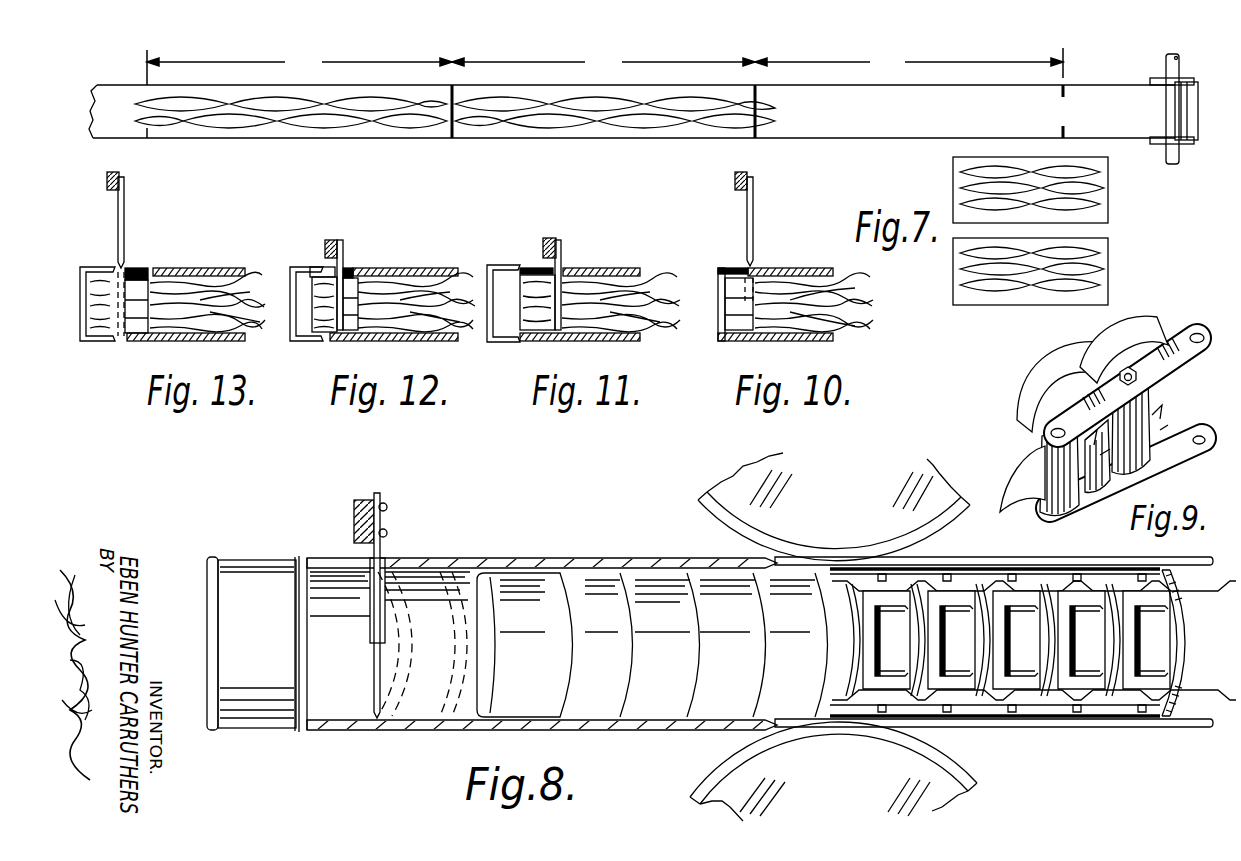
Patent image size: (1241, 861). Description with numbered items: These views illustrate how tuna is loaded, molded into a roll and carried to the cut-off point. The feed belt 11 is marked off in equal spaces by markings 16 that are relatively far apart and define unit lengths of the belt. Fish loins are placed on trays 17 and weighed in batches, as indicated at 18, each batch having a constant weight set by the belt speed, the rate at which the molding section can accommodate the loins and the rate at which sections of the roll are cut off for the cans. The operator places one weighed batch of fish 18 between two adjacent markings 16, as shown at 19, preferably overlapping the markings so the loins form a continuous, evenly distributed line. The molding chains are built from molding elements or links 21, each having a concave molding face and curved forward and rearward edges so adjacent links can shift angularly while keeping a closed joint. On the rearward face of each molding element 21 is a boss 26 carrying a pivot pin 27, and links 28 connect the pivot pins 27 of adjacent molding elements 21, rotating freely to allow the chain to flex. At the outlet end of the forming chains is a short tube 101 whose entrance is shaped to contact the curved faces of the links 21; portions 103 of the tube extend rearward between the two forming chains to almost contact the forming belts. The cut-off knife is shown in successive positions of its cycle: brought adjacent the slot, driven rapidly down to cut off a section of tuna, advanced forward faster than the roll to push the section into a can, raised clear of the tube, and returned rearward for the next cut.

In FIG. 7, the feed belt 11 is at (905, 127).
In FIG. 7, the markings 16 is at (1070, 83).
In FIG. 7, the tray 17 is at (1147, 269).
In FIG. 7, the weighed batch of fish 18 is at (1147, 241).
In FIG. 7, the batch placed between markings 19 is at (573, 123).
In FIG. 9, the molding element 21 is at (1152, 348).
In FIG. 8, the molding element 21 is at (1027, 578).
In FIG. 9, the boss 26 is at (1133, 452).
In FIG. 8, the boss 26 is at (1000, 650).
In FIG. 9, the pivot pin 27 is at (1128, 380).
In FIG. 8, the pivot pin 27 is at (1003, 577).
In FIG. 9, the link 28 is at (1203, 352).
In FIG. 8, the link 28 is at (977, 583).
In FIG. 8, the tube 101 is at (470, 558).
In FIG. 8, the tube portions 103 is at (747, 740).